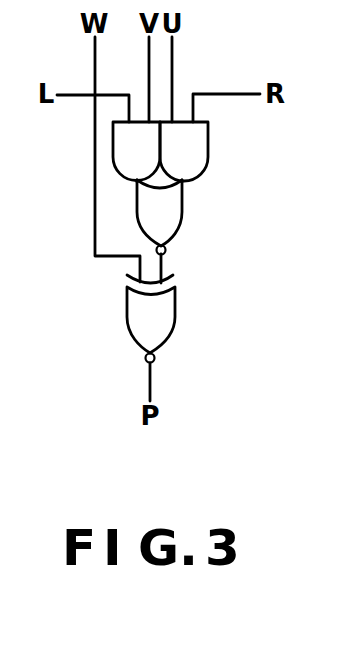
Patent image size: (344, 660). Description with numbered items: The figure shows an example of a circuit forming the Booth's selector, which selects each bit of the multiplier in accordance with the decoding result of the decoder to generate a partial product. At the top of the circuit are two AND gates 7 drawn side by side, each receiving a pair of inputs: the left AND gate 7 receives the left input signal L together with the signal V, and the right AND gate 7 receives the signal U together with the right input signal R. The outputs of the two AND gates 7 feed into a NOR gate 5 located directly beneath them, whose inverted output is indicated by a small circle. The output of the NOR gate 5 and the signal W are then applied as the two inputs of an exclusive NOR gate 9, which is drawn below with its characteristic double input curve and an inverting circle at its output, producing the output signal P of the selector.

The AND gate 7 is at (208, 148).
The NOR gate 5 is at (183, 206).
The exclusive NOR gate 9 is at (176, 317).